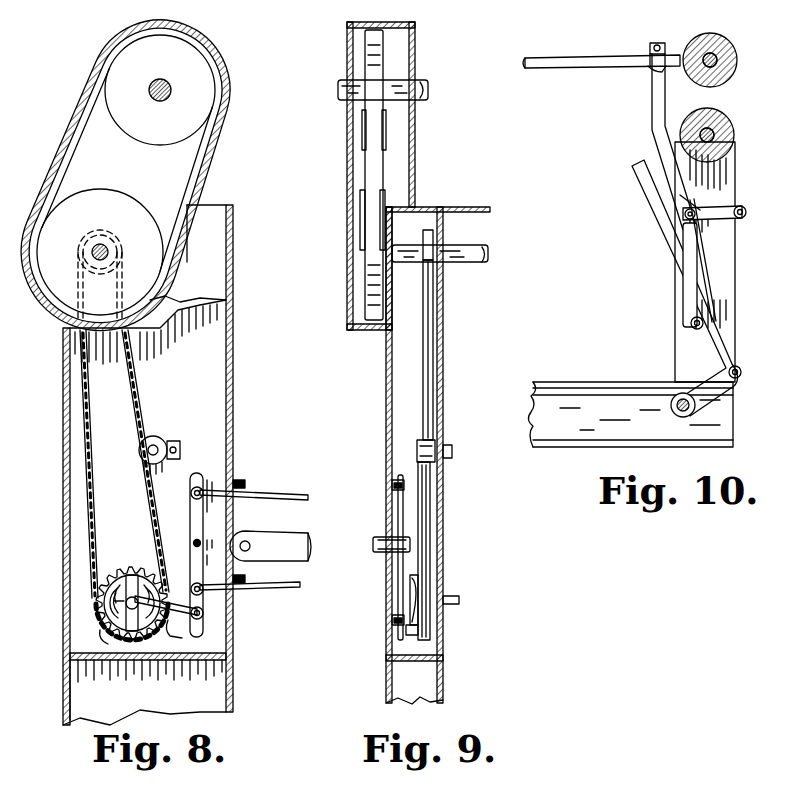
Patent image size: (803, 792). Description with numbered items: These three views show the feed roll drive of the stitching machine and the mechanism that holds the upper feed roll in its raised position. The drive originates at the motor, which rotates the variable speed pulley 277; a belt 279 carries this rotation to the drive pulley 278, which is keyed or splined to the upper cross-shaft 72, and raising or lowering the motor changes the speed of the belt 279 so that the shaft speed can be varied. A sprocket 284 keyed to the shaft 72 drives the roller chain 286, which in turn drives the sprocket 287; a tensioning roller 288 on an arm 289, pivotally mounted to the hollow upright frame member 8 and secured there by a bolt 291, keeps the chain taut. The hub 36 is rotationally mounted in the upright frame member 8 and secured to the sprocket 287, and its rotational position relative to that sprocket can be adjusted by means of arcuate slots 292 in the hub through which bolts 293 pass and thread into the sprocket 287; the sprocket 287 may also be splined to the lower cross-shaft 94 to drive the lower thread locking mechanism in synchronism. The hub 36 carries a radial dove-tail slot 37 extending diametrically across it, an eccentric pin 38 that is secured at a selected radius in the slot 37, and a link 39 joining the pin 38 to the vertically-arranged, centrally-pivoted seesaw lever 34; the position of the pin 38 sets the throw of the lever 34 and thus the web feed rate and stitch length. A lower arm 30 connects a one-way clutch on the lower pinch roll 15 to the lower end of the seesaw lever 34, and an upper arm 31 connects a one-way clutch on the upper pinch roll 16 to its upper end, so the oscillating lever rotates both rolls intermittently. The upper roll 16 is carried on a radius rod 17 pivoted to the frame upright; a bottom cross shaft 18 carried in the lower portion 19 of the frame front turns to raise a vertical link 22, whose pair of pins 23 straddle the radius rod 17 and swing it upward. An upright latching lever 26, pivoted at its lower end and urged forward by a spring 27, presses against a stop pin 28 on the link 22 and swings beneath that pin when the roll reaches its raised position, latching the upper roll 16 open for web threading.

In FIG. 8, the upright frame member 8 is at (220, 273).
In FIG. 10, the lower pinch roll 15 is at (722, 121).
In FIG. 10, the upper pinch roll 16 is at (718, 50).
In FIG. 8, the radius rod 17 is at (280, 542).
In FIG. 10, the radius rod 17 is at (576, 68).
In FIG. 10, the bottom cross shaft 18 is at (672, 406).
In FIG. 10, the lower portion of frame front end 19 is at (724, 424).
In FIG. 10, the vertical link 22 is at (718, 310).
In FIG. 10, the pin 23 is at (650, 44).
In FIG. 10, the latching lever 26 is at (682, 282).
In FIG. 10, the spring 27 is at (716, 274).
In FIG. 10, the stop pin 28 is at (682, 229).
In FIG. 8, the lower arm 30 is at (292, 587).
In FIG. 9, the lower arm 30 is at (392, 602).
In FIG. 8, the upper arm 31 is at (282, 493).
In FIG. 9, the upper arm 31 is at (392, 488).
In FIG. 8, the seesaw lever 34 is at (190, 518).
In FIG. 9, the seesaw lever 34 is at (398, 566).
In FIG. 8, the hub 36 is at (130, 576).
In FIG. 9, the hub 36 is at (402, 632).
In FIG. 8, the radial dove-tail slot 37 is at (137, 568).
In FIG. 8, the eccentric pin 38 is at (103, 634).
In FIG. 8, the link 39 is at (176, 623).
In FIG. 8, the upper cross-shaft 72 is at (110, 244).
In FIG. 9, the upper cross-shaft 72 is at (466, 248).
In FIG. 9, the lower cross-shaft 94 is at (444, 598).
In FIG. 8, the variable speed pulley 277 is at (173, 67).
In FIG. 9, the variable speed pulley 277 is at (386, 122).
In FIG. 8, the drive pulley 278 is at (114, 217).
In FIG. 9, the drive pulley 278 is at (382, 192).
In FIG. 8, the belt 279 is at (174, 197).
In FIG. 9, the belt 279 is at (363, 166).
In FIG. 8, the sprocket 284 is at (76, 264).
In FIG. 9, the sprocket 284 is at (428, 231).
In FIG. 8, the roller chain 286 is at (132, 383).
In FIG. 9, the roller chain 286 is at (421, 328).
In FIG. 8, the sprocket 287 is at (112, 564).
In FIG. 9, the sprocket 287 is at (430, 633).
In FIG. 8, the tensioning roller 288 is at (160, 437).
In FIG. 9, the tensioning roller 288 is at (416, 443).
In FIG. 8, the arm 289 is at (178, 448).
In FIG. 9, the bolt 291 is at (454, 450).
In FIG. 8, the arcuate slot 292 is at (112, 601).
In FIG. 8, the bolt 293 is at (164, 582).
In FIG. 9, the bolt 293 is at (415, 576).